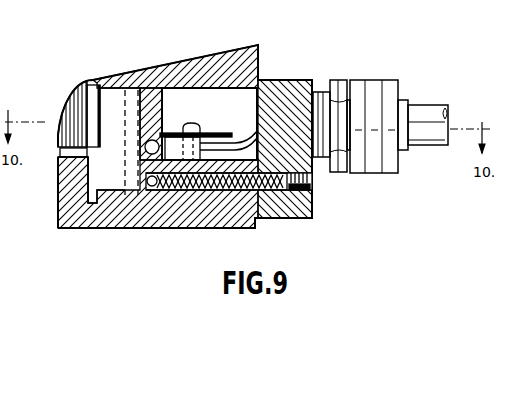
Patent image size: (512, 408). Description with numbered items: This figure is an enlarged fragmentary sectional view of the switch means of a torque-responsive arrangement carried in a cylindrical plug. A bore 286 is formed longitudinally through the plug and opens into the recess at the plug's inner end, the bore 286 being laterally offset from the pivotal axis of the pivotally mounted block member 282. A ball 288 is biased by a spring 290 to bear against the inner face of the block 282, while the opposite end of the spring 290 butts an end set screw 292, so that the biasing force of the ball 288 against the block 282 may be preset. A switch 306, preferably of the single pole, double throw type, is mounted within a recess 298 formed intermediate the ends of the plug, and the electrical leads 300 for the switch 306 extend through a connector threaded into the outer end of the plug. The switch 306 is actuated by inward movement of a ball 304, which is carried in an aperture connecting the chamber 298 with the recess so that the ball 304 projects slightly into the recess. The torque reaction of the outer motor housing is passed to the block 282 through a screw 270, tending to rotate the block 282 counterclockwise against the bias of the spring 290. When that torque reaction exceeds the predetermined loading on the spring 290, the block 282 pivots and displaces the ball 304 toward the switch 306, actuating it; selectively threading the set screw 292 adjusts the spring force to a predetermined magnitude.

The screw 270 is at (92, 122).
The block member 282 is at (100, 178).
The bore 286 is at (257, 190).
The ball 288 is at (152, 186).
The spring 290 is at (205, 190).
The end set screw 292 is at (312, 187).
The recess 298 is at (257, 108).
The electrical leads 300 is at (250, 137).
The ball 304 is at (152, 140).
The switch 306 is at (175, 140).